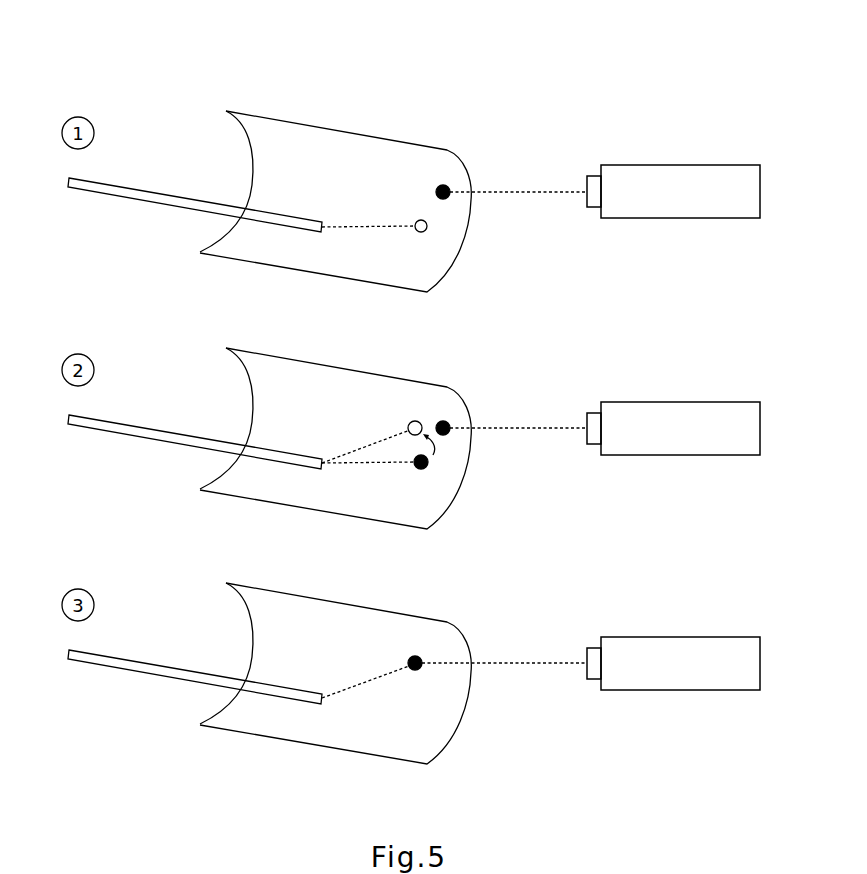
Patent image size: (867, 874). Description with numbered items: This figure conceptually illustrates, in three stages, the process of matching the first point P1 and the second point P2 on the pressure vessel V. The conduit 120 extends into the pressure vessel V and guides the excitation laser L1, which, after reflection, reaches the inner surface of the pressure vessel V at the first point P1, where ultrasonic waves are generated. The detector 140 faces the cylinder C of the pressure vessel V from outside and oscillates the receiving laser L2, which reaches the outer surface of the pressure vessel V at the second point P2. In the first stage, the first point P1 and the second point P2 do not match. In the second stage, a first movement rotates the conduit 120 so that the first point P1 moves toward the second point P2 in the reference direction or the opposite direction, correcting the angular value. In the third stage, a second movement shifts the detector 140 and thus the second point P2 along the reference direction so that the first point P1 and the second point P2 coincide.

The conduit 120 is at (153, 191).
The detector 140 is at (680, 164).
The cylinder C is at (358, 133).
The pressure vessel V is at (354, 62).
The first point P1 is at (428, 226).
The second point P2 is at (444, 185).
The excitation laser L1 is at (368, 222).
The receiving laser L2 is at (537, 190).